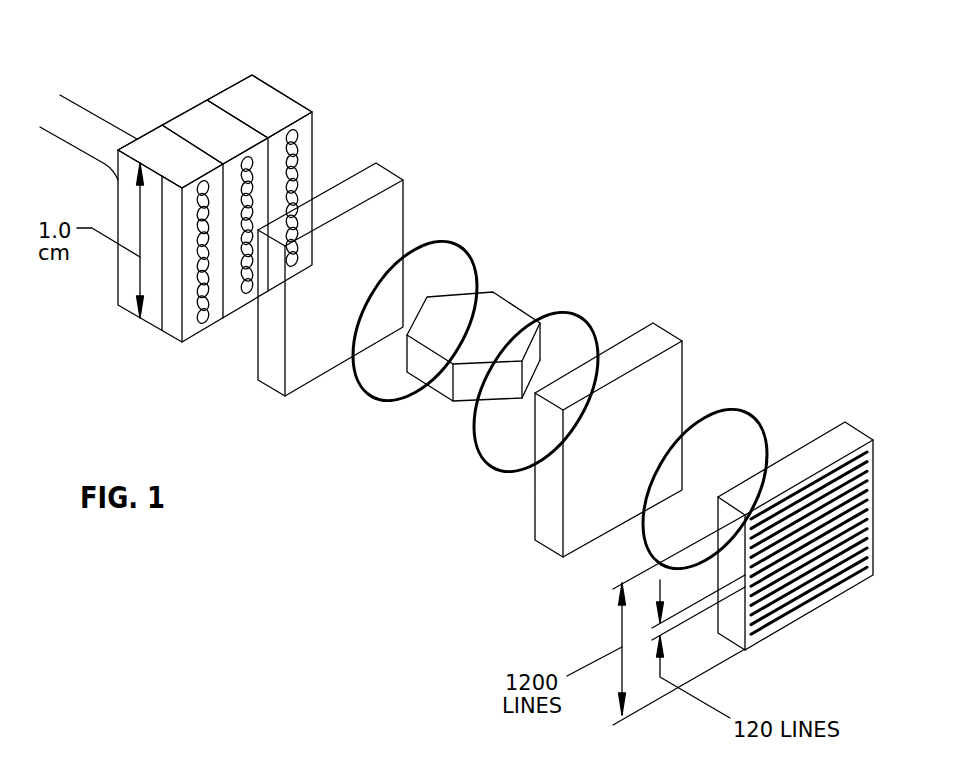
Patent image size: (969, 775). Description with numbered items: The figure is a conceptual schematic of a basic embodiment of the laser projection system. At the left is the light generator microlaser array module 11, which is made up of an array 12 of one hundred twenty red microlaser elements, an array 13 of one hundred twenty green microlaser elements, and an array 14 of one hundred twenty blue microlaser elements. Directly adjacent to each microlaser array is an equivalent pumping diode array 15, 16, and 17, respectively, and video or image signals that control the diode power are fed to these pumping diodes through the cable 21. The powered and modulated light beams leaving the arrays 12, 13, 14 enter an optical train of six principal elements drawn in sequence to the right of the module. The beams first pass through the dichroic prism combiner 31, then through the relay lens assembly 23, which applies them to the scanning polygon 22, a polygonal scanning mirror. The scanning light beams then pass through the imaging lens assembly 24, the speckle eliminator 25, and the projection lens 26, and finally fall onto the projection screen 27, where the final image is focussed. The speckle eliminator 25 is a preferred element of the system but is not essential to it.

The light generator microlaser array module 11 is at (292, 62).
The array of red microlaser elements 12 is at (190, 335).
The array of green microlaser elements 13 is at (235, 307).
The array of blue microlaser elements 14 is at (312, 132).
The pumping diode array 15 is at (157, 145).
The pumping diode array 16 is at (202, 118).
The pumping diode array 17 is at (245, 90).
The cable 21 is at (55, 137).
The scanning polygon 22 is at (512, 303).
The relay lens assembly 23 is at (452, 250).
The imaging lens assembly 24 is at (573, 323).
The speckle eliminator 25 is at (682, 342).
The projection lens 26 is at (765, 460).
The projection screen 27 is at (842, 590).
The dichroic prism combiner 31 is at (317, 372).